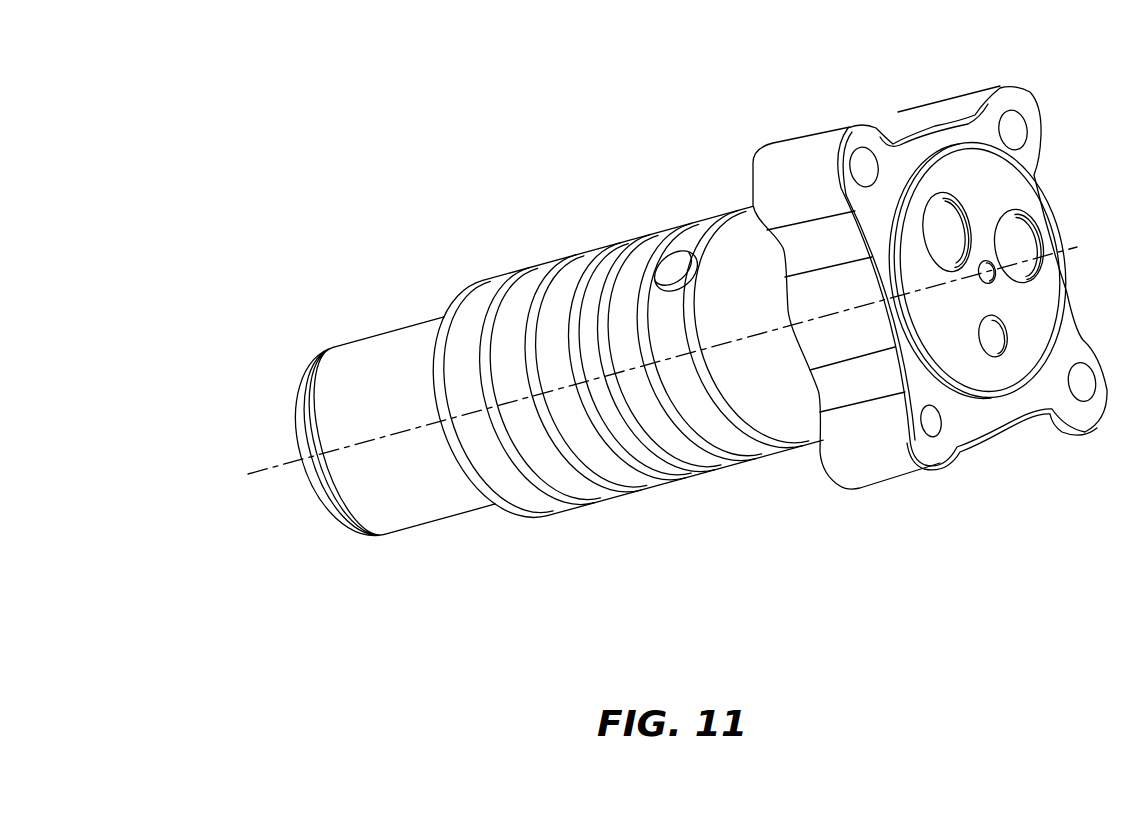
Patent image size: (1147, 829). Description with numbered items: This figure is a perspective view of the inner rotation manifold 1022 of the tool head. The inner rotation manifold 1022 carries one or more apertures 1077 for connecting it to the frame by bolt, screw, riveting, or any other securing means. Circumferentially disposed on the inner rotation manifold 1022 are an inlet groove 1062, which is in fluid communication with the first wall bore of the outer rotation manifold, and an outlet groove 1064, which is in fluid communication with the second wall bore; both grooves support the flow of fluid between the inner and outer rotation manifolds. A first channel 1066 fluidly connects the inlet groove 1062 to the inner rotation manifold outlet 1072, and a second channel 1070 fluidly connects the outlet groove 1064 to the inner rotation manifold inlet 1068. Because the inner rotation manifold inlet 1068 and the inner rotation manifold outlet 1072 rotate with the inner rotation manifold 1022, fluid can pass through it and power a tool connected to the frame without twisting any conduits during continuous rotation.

The inner rotation manifold 1022 is at (608, 155).
The inlet groove 1062 is at (705, 228).
The outlet groove 1064 is at (583, 490).
The first channel 1066 is at (940, 236).
The inner rotation manifold inlet 1068 is at (957, 208).
The second channel 1070 is at (1008, 245).
The inner rotation manifold outlet 1072 is at (1038, 245).
The apertures 1077 is at (937, 430).